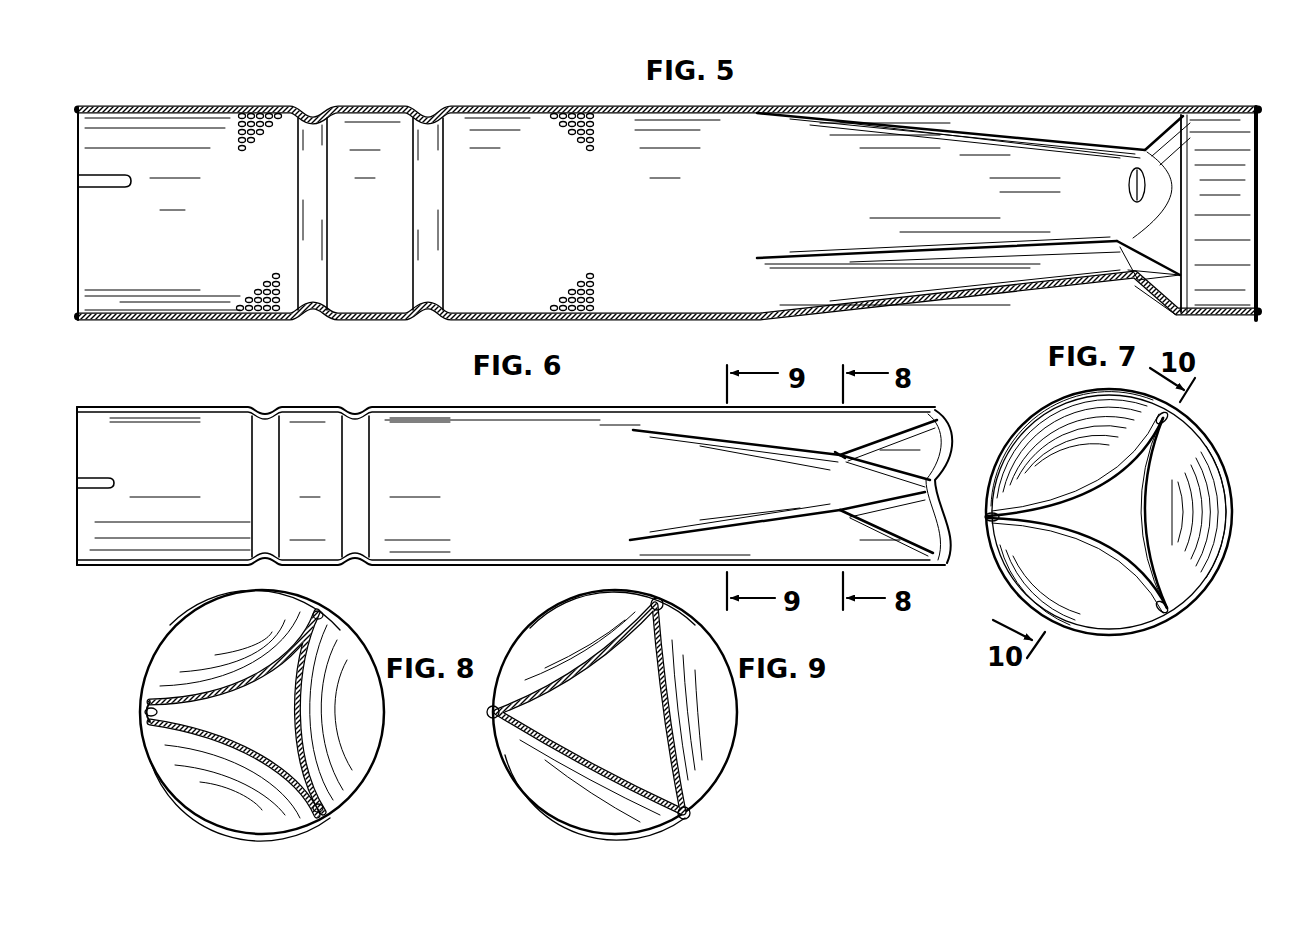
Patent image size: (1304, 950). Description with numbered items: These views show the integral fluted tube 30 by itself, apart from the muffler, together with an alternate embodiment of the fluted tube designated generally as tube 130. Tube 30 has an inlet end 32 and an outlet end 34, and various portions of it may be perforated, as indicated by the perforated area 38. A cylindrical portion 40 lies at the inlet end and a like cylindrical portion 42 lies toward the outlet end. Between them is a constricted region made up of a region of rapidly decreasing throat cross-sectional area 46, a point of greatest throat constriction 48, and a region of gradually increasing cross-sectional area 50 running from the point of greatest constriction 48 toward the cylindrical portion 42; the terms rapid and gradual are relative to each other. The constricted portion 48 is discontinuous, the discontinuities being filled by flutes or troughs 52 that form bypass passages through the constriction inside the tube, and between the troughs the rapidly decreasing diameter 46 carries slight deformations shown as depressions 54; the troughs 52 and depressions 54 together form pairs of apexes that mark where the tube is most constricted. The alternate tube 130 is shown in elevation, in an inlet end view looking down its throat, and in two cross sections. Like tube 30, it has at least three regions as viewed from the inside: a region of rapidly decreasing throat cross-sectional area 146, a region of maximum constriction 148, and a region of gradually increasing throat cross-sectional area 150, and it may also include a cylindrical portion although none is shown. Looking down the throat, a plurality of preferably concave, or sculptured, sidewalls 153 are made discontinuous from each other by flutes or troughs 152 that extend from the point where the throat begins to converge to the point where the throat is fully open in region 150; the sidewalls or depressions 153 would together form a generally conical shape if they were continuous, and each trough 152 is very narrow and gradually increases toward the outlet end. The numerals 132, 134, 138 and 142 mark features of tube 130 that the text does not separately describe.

In FIG. 5, the integral fluted tube 30 is at (760, 104).
In FIG. 5, the inlet end 32 is at (1257, 106).
In FIG. 5, the outlet end 34 is at (78, 123).
In FIG. 5, the perforated area 38 is at (592, 141).
In FIG. 5, the cylindrical portion 40 is at (1228, 323).
In FIG. 5, the cylindrical portion 42 is at (148, 325).
In FIG. 5, the region of rapidly decreasing throat cross-sectional area 46 is at (1163, 241).
In FIG. 5, the point of greatest throat constriction 48 is at (1152, 150).
In FIG. 6, the point of greatest throat constriction 48 is at (838, 455).
In FIG. 5, the region of gradually increasing cross-sectional area 50 is at (962, 130).
In FIG. 5, the flutes or troughs 52 is at (1104, 124).
In FIG. 5, the depressions 54 is at (1127, 186).
In FIG. 6, the integral fluted tube 130 is at (611, 404).
In FIG. 7, the integral fluted tube 130 is at (1213, 438).
In FIG. 8, the integral fluted tube 130 is at (143, 658).
In FIG. 9, the integral fluted tube 130 is at (532, 805).
In FIG. 6, the outlet end 132 is at (948, 423).
In FIG. 6, the inlet end 134 is at (77, 420).
In FIG. 6, the tapered portion 138 is at (482, 412).
In FIG. 6, the inlet portion 142 is at (165, 418).
In FIG. 6, the region of rapidly decreasing throat cross-sectional area 146 is at (906, 440).
In FIG. 7, the region of rapidly decreasing throat cross-sectional area 146 is at (1186, 544).
In FIG. 7, the region of maximum constriction 148 is at (1142, 507).
In FIG. 8, the region of maximum constriction 148 is at (292, 711).
In FIG. 6, the region of gradually increasing throat cross-sectional area 150 is at (747, 432).
In FIG. 8, the region of gradually increasing throat cross-sectional area 150 is at (200, 648).
In FIG. 9, the region of gradually increasing throat cross-sectional area 150 is at (550, 651).
In FIG. 6, the flutes or troughs 152 is at (815, 405).
In FIG. 7, the flutes or troughs 152 is at (1170, 421).
In FIG. 8, the flutes or troughs 152 is at (326, 618).
In FIG. 9, the flutes or troughs 152 is at (668, 616).
In FIG. 7, the sidewalls 153 is at (1048, 446).